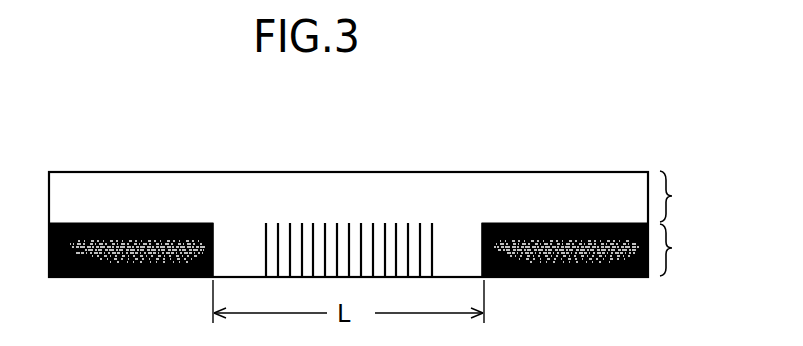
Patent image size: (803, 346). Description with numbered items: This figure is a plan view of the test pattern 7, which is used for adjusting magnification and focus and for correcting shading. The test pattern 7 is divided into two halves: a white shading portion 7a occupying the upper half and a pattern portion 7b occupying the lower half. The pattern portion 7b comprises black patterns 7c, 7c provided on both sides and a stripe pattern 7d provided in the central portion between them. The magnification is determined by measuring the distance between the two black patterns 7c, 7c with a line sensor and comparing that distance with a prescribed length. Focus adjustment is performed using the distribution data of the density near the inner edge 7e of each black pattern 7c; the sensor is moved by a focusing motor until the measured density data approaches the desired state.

The test pattern 7 is at (527, 170).
The white shading portion 7a is at (684, 196).
The pattern portion 7b is at (461, 250).
The black pattern 7c is at (132, 278).
The stripe pattern 7d is at (355, 206).
The inner edge 7e is at (213, 246).